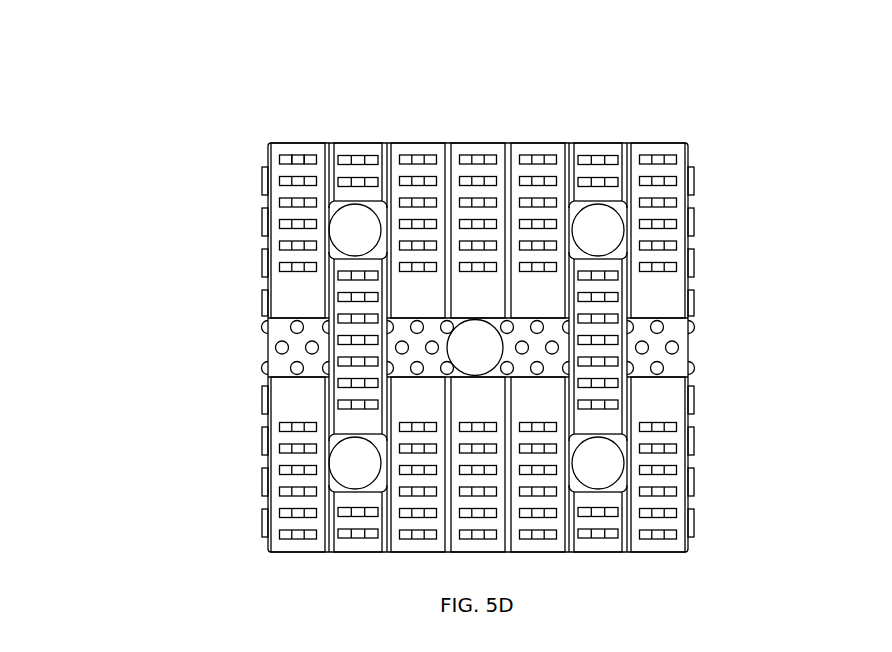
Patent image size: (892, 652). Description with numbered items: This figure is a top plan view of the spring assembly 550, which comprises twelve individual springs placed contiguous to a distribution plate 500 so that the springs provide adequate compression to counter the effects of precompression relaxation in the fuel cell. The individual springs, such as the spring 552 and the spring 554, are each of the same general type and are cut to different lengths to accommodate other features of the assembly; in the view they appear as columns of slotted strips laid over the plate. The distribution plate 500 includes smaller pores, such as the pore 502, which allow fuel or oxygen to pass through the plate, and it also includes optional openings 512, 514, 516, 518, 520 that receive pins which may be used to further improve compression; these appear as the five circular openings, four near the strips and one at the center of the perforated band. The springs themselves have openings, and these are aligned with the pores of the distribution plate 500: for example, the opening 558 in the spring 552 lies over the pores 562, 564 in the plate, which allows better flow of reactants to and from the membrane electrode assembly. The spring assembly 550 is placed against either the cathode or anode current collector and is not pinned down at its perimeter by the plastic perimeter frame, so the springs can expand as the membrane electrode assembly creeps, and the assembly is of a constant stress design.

The spring assembly 550 is at (522, 118).
The spring 552 is at (268, 148).
The spring 554 is at (373, 148).
The opening 558 is at (299, 158).
The pore 562 is at (283, 158).
The pore 564 is at (313, 158).
The distribution plate 500 is at (268, 350).
The pore 502 is at (676, 348).
The opening 512 is at (584, 240).
The opening 514 is at (341, 240).
The opening 516 is at (461, 357).
The opening 518 is at (341, 473).
The opening 520 is at (584, 473).